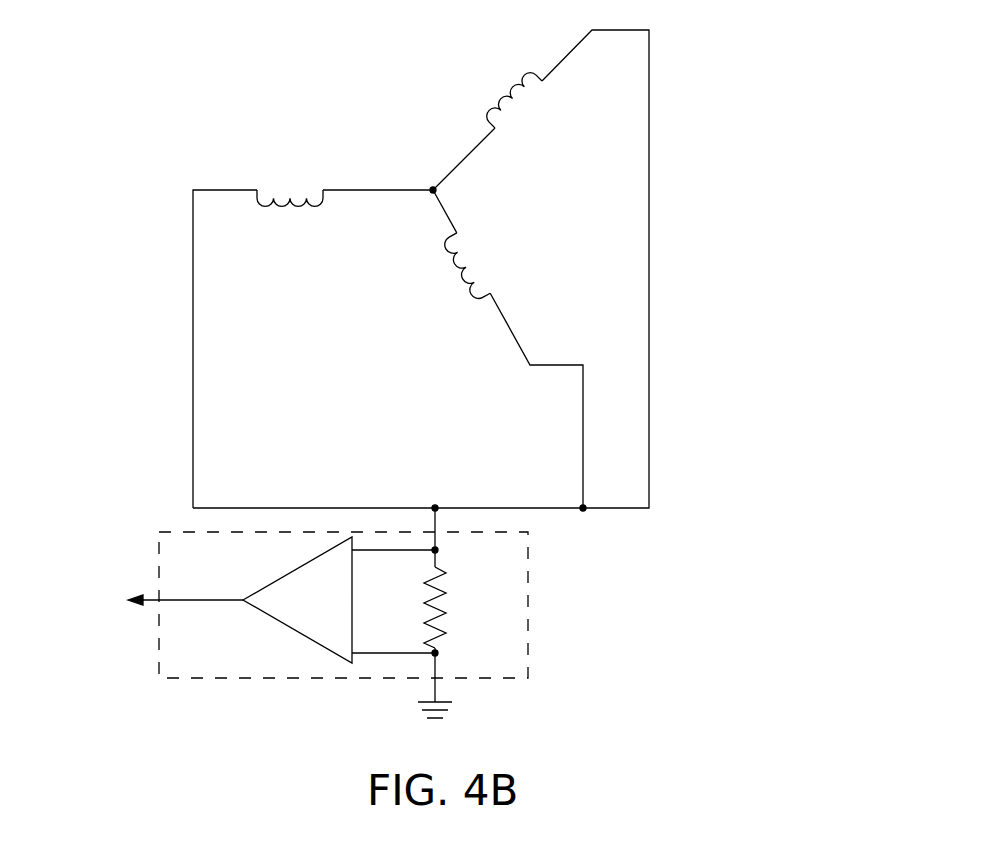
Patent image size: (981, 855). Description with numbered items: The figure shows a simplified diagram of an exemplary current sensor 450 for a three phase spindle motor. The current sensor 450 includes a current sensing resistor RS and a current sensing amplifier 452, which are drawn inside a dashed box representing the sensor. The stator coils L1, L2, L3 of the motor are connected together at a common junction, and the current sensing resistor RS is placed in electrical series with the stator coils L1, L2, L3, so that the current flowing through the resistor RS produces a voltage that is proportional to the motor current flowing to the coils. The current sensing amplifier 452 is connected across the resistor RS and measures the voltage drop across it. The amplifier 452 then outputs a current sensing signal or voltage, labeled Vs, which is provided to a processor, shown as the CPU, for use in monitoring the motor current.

The current sensor 450 is at (345, 613).
The current sensing amplifier 452 is at (341, 619).
The stator coil L1 is at (290, 218).
The stator coil L2 is at (507, 88).
The stator coil L3 is at (456, 267).
The current sensing resistor RS is at (457, 607).